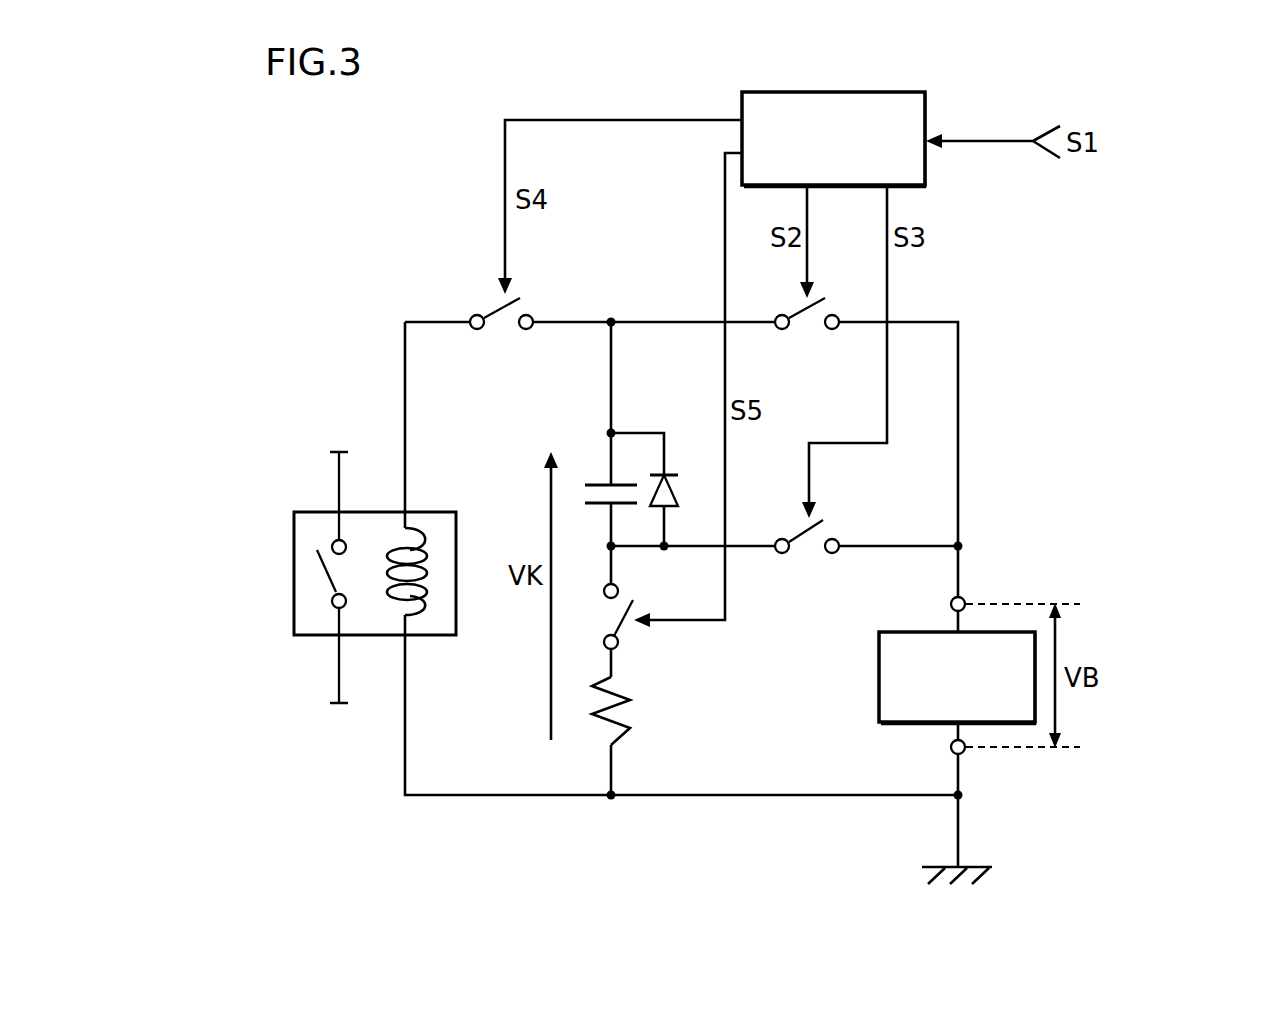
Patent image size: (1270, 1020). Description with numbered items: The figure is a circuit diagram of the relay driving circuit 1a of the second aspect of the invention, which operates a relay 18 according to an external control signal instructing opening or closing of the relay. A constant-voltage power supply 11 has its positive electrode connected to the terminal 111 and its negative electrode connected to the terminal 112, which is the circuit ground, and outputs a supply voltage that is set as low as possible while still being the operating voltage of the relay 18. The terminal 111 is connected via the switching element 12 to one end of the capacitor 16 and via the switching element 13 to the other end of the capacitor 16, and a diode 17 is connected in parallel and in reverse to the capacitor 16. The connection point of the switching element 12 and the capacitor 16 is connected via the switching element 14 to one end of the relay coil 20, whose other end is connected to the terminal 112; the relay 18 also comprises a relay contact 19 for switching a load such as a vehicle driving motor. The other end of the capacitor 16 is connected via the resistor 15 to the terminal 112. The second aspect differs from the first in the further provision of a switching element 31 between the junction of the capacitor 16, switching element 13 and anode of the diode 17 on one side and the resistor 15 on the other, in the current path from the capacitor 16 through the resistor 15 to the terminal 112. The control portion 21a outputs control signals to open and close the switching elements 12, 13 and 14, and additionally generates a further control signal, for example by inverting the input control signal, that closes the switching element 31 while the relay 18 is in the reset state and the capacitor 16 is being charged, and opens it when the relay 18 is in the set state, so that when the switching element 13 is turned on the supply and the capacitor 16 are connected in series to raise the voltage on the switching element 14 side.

The relay driving circuit 1a is at (1144, 165).
The control portion 21a is at (855, 92).
The constant-voltage power supply 11 is at (879, 678).
The terminal 111 is at (965, 598).
The terminal 112 is at (963, 753).
The switching element 12 is at (807, 330).
The switching element 13 is at (807, 553).
The switching element 14 is at (501, 330).
The resistor 15 is at (628, 708).
The capacitor 16 is at (596, 483).
The diode 17 is at (682, 492).
The relay 18 is at (294, 620).
The relay contact 19 is at (313, 570).
The relay coil 20 is at (432, 592).
The switching element 31 is at (657, 636).